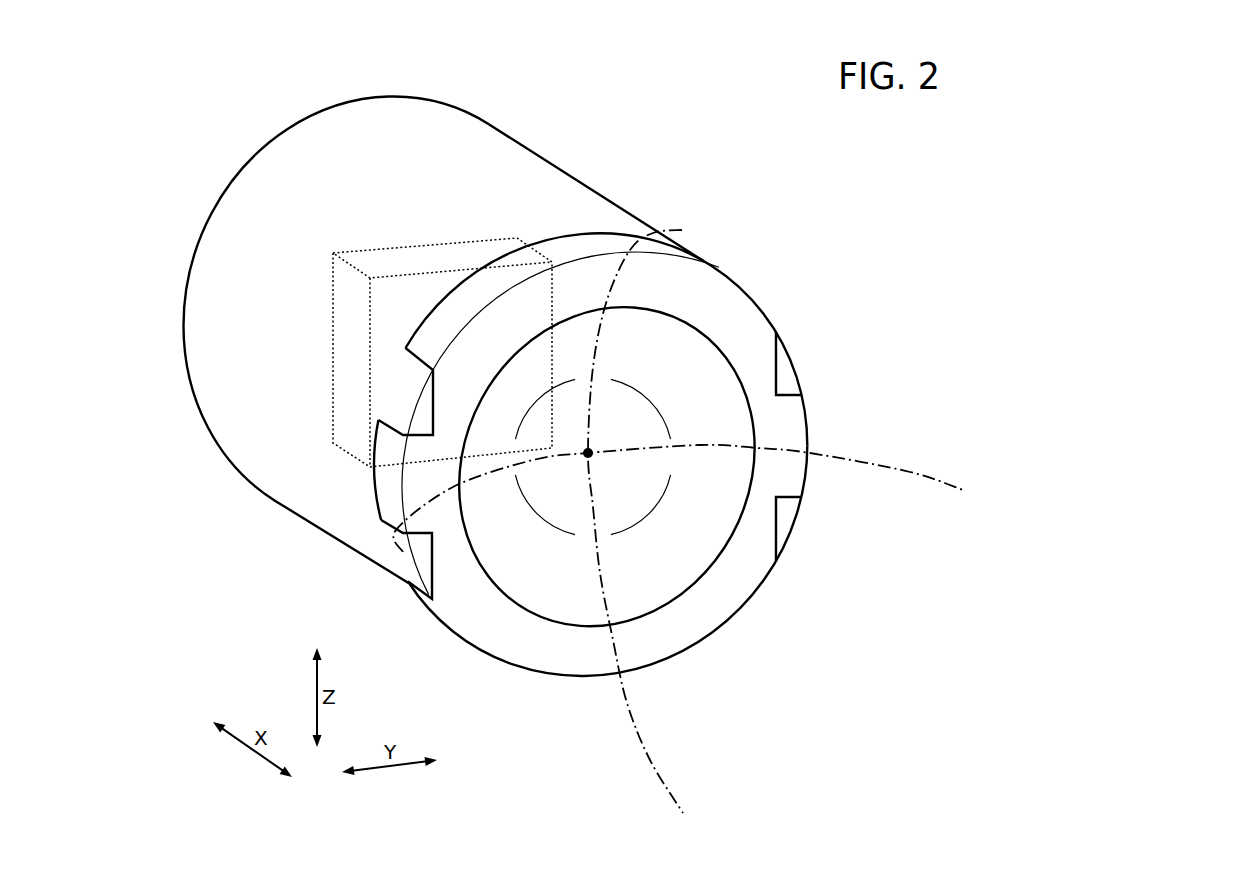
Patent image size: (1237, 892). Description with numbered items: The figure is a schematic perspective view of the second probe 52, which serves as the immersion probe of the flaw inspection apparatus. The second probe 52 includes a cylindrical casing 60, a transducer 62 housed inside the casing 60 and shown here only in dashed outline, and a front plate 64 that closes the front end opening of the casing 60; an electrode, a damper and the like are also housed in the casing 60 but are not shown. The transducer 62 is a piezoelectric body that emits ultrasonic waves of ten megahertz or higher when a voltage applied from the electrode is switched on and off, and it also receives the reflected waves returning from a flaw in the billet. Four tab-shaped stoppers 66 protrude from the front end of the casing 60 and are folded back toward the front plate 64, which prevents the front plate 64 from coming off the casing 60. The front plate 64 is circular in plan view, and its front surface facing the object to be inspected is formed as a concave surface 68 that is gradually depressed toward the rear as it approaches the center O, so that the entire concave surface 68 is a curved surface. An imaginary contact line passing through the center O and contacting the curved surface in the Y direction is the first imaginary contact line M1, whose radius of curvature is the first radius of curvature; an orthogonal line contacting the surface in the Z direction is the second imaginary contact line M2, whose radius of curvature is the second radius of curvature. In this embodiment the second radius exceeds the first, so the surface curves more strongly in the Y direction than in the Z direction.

The second probe 52 is at (1004, 154).
The cylindrical casing 60 is at (587, 190).
The transducer 62 is at (388, 248).
The front plate 64 is at (745, 315).
The tab-shaped stoppers 66 is at (790, 372).
The concave surface 68 is at (688, 543).
The center O is at (594, 448).
The first imaginary contact line M1 is at (910, 474).
The second imaginary contact line M2 is at (645, 755).